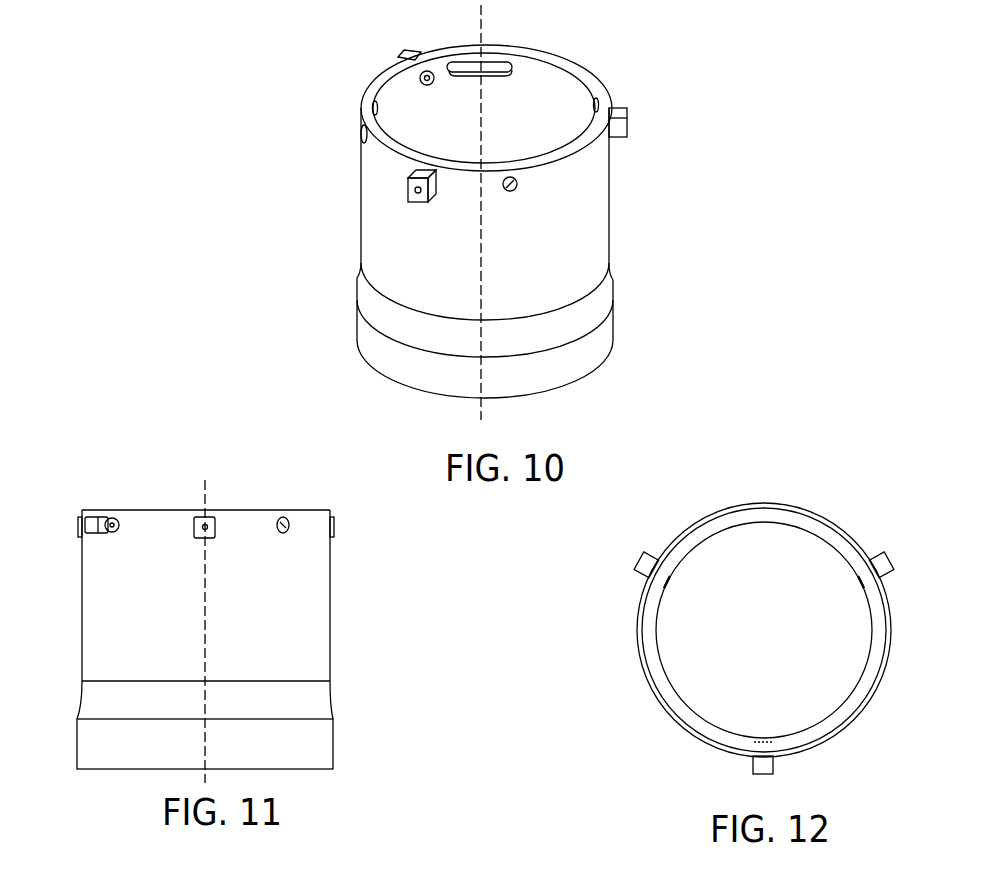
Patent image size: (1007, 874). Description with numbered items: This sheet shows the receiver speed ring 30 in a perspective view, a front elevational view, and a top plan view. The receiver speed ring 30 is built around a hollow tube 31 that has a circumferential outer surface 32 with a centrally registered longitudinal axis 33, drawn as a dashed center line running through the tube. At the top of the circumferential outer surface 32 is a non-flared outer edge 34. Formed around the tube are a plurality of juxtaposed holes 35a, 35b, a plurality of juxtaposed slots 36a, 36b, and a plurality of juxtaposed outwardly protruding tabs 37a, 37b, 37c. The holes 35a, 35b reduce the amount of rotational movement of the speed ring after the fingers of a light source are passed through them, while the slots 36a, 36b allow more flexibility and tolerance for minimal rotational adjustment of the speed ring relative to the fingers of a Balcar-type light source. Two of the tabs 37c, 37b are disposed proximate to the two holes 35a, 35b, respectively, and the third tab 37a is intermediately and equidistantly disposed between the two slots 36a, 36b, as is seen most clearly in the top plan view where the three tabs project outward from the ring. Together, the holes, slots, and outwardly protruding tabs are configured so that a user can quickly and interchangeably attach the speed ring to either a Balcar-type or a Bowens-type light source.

In FIG. 10, the receiver speed ring 30 is at (292, 118).
In FIG. 11, the receiver speed ring 30 is at (160, 485).
In FIG. 12, the receiver speed ring 30 is at (757, 495).
In FIG. 10, the hollow tube 31 is at (541, 100).
In FIG. 10, the circumferential outer surface 32 is at (601, 232).
In FIG. 11, the circumferential outer surface 32 is at (205, 639).
In FIG. 12, the circumferential outer surface 32 is at (637, 632).
In FIG. 10, the longitudinal axis 33 is at (480, 238).
In FIG. 11, the longitudinal axis 33 is at (205, 600).
In FIG. 10, the non-flared outer edge 34 is at (590, 146).
In FIG. 10, the hole 35a is at (597, 106).
In FIG. 10, the hole 35b is at (516, 182).
In FIG. 11, the hole 35b is at (290, 518).
In FIG. 10, the slot 36a is at (363, 130).
In FIG. 11, the slot 36a is at (103, 520).
In FIG. 10, the slot 36b is at (498, 64).
In FIG. 10, the outwardly protruding tab 37a is at (405, 55).
In FIG. 11, the outwardly protruding tab 37a is at (78, 525).
In FIG. 12, the outwardly protruding tab 37a is at (644, 560).
In FIG. 10, the outwardly protruding tab 37b is at (409, 185).
In FIG. 11, the outwardly protruding tab 37b is at (213, 522).
In FIG. 12, the outwardly protruding tab 37b is at (773, 765).
In FIG. 10, the outwardly protruding tab 37c is at (628, 122).
In FIG. 11, the outwardly protruding tab 37c is at (338, 528).
In FIG. 12, the outwardly protruding tab 37c is at (885, 562).